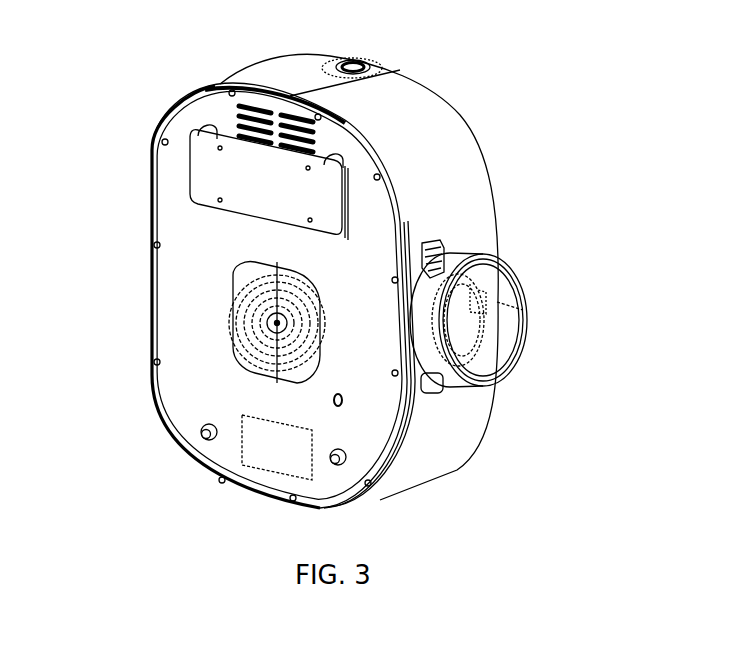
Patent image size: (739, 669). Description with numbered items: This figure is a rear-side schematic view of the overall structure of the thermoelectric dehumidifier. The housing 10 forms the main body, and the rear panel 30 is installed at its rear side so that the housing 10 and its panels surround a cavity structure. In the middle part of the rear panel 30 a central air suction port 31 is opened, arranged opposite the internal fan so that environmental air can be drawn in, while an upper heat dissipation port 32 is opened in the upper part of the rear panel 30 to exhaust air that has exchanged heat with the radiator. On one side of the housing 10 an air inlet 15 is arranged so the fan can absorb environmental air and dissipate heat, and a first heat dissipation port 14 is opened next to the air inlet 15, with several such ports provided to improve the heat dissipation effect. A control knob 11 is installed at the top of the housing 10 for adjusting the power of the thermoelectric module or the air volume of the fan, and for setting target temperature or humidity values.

The housing 10 is at (420, 127).
The control knob 11 is at (359, 64).
The first heat dissipation port 14 is at (405, 247).
The air inlet 15 is at (502, 327).
The rear panel 30 is at (183, 248).
The central air suction port 31 is at (250, 322).
The upper heat dissipation port 32 is at (279, 145).